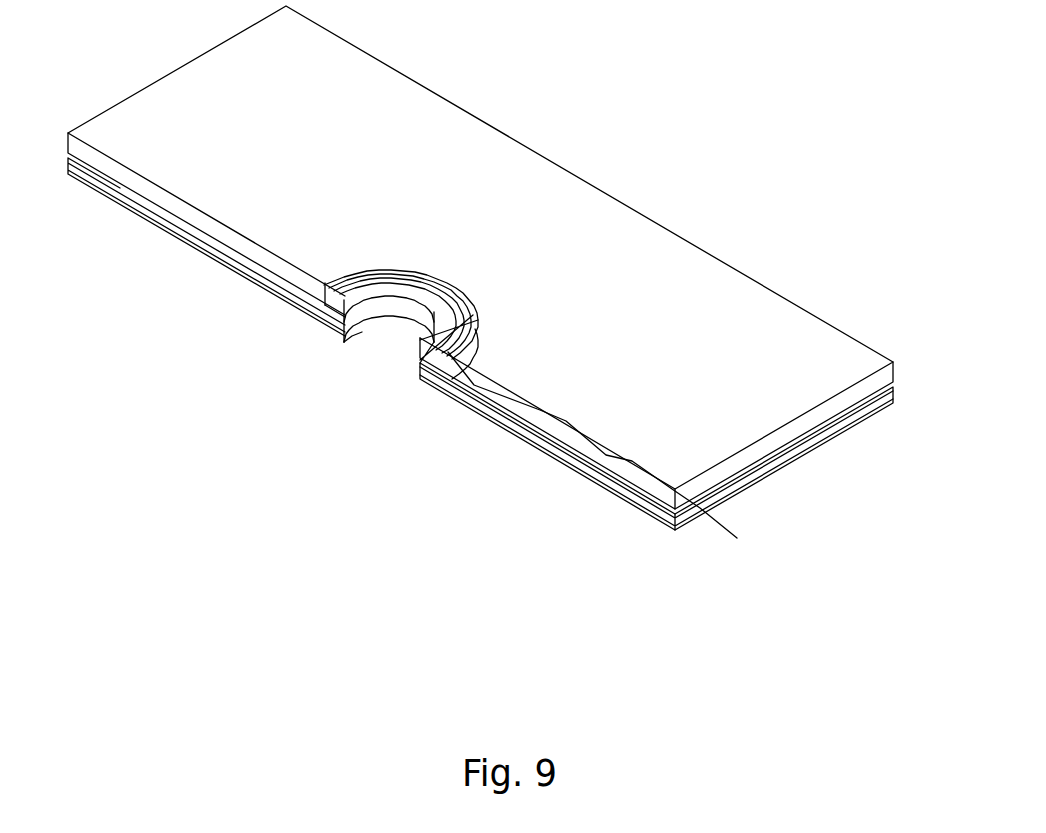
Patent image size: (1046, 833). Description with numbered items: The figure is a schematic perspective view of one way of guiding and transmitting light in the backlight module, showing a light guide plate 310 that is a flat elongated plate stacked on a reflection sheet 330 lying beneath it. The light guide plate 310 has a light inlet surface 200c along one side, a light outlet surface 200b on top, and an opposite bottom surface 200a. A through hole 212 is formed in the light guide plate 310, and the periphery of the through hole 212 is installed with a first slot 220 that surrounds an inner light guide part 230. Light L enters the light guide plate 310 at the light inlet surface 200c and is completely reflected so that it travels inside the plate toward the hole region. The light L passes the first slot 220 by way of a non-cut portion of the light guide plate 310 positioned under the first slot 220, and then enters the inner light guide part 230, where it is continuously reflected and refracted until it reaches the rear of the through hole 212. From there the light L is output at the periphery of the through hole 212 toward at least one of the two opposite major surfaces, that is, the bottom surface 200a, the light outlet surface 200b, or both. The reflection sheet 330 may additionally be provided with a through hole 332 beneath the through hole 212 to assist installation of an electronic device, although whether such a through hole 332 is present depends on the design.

The light guide plate 310 is at (495, 291).
The reflection sheet 330 is at (896, 405).
The inner light guide part 230 is at (448, 283).
The through hole 212 is at (382, 302).
The first slot 220 is at (452, 363).
The through hole 332 is at (360, 333).
The bottom surface 200a is at (609, 474).
The light outlet surface 200b is at (783, 334).
The light inlet surface 200c is at (776, 440).
The light L is at (706, 522).